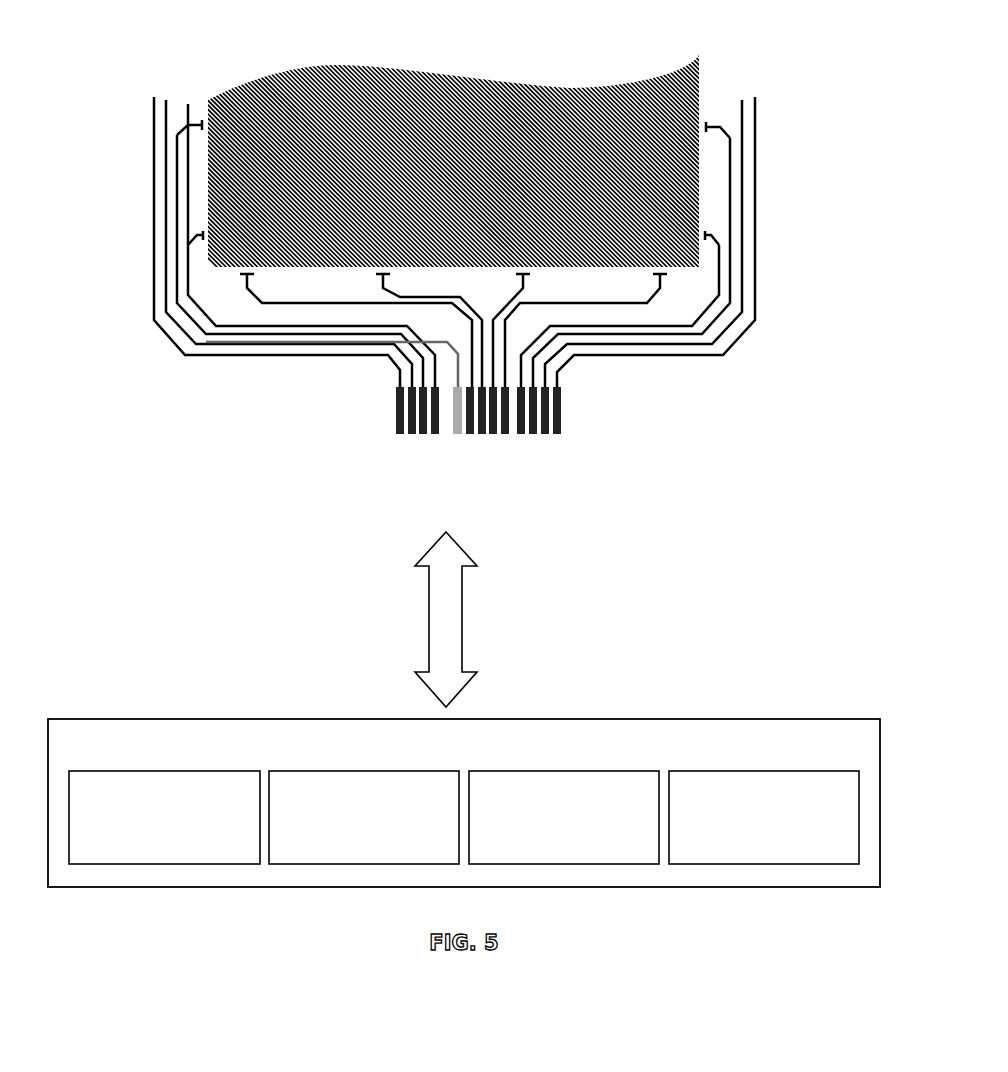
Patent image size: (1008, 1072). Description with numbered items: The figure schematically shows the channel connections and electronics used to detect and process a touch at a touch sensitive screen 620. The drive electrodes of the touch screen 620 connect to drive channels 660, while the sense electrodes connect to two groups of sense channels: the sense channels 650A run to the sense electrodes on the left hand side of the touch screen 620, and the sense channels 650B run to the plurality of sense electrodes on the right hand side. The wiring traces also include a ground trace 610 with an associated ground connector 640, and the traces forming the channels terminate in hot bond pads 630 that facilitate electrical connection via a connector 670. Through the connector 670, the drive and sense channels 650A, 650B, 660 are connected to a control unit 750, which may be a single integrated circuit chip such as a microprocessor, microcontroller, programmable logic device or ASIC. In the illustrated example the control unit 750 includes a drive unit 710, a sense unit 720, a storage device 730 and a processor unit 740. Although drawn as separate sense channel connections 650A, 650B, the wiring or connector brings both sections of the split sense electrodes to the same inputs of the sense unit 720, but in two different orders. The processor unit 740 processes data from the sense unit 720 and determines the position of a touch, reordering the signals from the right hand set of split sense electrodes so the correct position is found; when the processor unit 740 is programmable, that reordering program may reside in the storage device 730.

The ground trace 610 is at (440, 361).
The touch screen 620 is at (469, 111).
The hot bond pads 630 is at (553, 451).
The ground connector 640 is at (458, 446).
The sense channels 650A is at (160, 347).
The sense channels 650B is at (752, 350).
The drive channels 660 is at (526, 325).
The connector 670 is at (479, 617).
The drive unit 710 is at (364, 817).
The sense unit 720 is at (564, 817).
The storage device 730 is at (764, 817).
The processor unit 740 is at (164, 817).
The control unit 750 is at (464, 803).